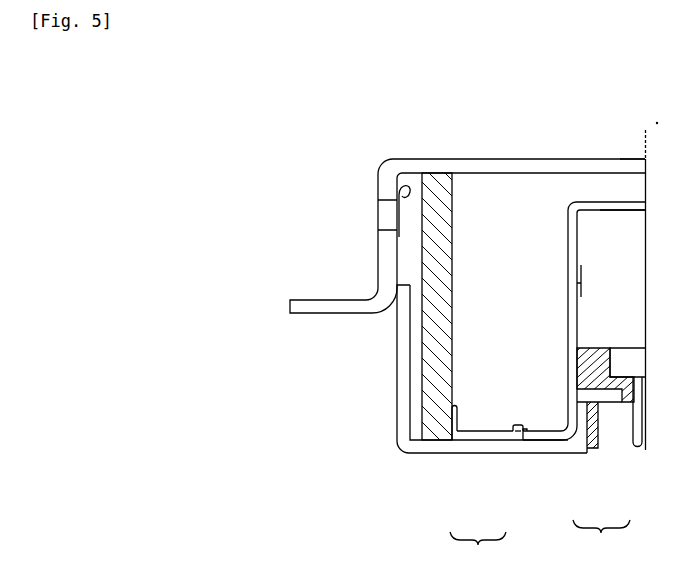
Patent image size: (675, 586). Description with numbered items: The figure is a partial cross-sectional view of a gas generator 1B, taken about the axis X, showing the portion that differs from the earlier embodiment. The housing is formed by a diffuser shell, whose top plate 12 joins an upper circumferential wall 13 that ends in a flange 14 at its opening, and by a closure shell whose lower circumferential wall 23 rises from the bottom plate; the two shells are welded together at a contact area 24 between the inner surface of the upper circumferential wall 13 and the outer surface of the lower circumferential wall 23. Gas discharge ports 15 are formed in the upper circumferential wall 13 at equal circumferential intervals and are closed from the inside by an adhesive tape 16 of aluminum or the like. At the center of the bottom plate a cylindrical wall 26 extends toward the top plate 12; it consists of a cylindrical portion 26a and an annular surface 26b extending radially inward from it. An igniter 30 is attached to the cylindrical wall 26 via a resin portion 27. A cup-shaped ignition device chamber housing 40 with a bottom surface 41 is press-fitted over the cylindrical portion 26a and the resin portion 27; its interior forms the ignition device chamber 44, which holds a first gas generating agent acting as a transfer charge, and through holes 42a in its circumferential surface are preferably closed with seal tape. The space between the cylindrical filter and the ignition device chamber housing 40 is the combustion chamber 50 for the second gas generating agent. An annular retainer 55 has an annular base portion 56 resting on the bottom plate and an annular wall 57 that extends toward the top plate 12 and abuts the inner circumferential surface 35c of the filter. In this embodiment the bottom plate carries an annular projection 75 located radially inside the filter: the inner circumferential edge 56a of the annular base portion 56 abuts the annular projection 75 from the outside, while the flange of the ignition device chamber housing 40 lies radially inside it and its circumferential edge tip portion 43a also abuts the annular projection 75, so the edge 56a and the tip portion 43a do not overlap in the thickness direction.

The top plate 12 is at (498, 160).
The gas generator 1B is at (575, 158).
The axis X is at (648, 278).
The upper circumferential wall 13 is at (377, 258).
The flange 14 is at (320, 299).
The gas discharge ports 15 is at (388, 219).
The adhesive tape 16 is at (395, 184).
The contact area 24 is at (380, 310).
The lower circumferential wall 23 is at (397, 403).
The inner circumferential surface 35c is at (451, 326).
The annular wall 57 is at (453, 441).
The annular base portion 56 is at (505, 441).
The inner circumferential edge 56a is at (519, 433).
The annular retainer 55 is at (478, 550).
The annular projection 75 is at (516, 427).
The circumferential edge tip portion 43a is at (522, 426).
The ignition device chamber housing 40 is at (568, 232).
The bottom surface 41 is at (612, 201).
The ignition device chamber 44 is at (622, 229).
The combustion chamber 50 is at (484, 280).
The through holes 42a is at (571, 283).
The igniter 30 is at (620, 347).
The resin portion 27 is at (579, 366).
The cylindrical portion 26a is at (590, 440).
The annular surface 26b is at (605, 400).
The cylindrical wall 26 is at (601, 538).